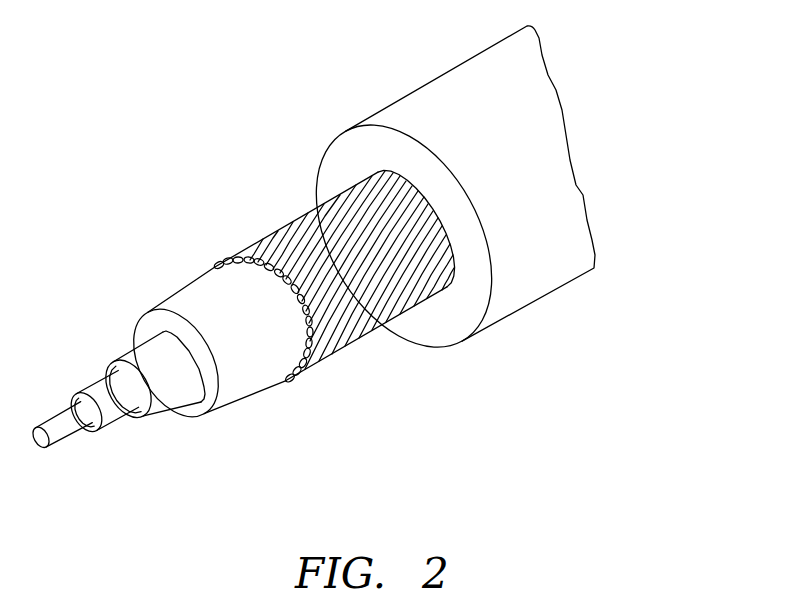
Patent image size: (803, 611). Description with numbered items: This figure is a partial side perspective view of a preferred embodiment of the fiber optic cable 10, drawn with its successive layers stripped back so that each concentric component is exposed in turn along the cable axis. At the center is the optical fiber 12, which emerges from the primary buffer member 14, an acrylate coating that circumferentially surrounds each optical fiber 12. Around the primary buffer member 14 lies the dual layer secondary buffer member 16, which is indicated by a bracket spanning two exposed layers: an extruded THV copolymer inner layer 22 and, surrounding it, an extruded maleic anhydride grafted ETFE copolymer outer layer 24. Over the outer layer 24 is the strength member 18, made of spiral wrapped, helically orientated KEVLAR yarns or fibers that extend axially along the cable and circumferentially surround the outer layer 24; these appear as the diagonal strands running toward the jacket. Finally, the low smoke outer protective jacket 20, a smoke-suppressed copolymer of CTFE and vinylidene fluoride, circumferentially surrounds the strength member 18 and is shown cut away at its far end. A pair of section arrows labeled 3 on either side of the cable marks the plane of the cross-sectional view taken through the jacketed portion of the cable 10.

The fiber optic cable 10 is at (150, 87).
The optical fiber 12 is at (67, 435).
The primary buffer member 14 is at (120, 410).
The secondary buffer member 16 is at (198, 262).
The strength member 18 is at (338, 338).
The outer protective jacket 20 is at (527, 193).
The inner layer 22 is at (168, 394).
The outer layer 24 is at (243, 376).
The section line for FIG. 3 is at (447, 225).